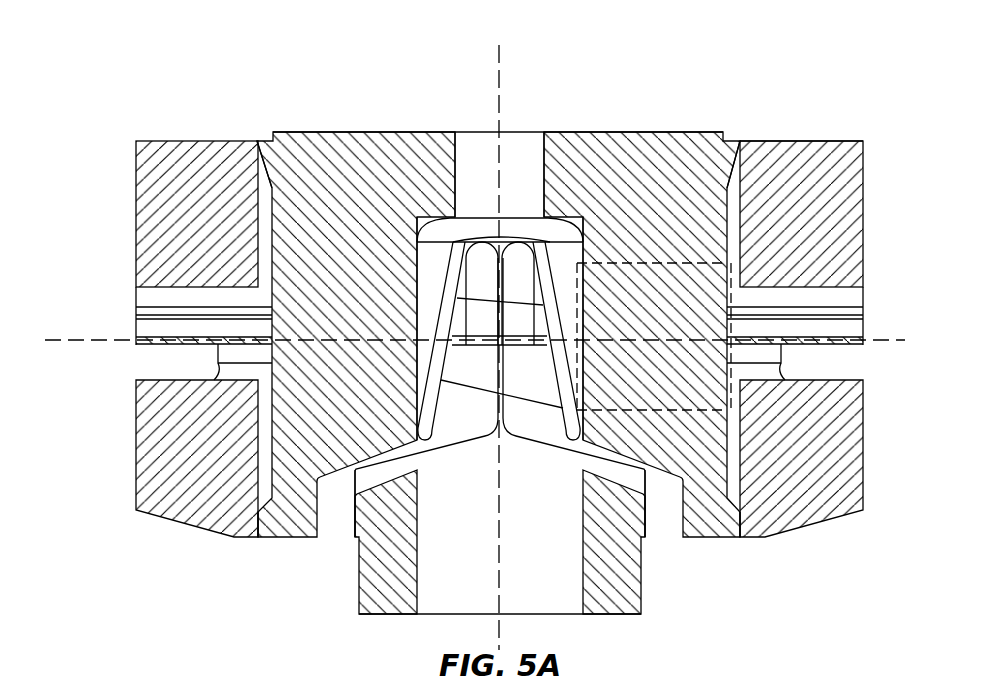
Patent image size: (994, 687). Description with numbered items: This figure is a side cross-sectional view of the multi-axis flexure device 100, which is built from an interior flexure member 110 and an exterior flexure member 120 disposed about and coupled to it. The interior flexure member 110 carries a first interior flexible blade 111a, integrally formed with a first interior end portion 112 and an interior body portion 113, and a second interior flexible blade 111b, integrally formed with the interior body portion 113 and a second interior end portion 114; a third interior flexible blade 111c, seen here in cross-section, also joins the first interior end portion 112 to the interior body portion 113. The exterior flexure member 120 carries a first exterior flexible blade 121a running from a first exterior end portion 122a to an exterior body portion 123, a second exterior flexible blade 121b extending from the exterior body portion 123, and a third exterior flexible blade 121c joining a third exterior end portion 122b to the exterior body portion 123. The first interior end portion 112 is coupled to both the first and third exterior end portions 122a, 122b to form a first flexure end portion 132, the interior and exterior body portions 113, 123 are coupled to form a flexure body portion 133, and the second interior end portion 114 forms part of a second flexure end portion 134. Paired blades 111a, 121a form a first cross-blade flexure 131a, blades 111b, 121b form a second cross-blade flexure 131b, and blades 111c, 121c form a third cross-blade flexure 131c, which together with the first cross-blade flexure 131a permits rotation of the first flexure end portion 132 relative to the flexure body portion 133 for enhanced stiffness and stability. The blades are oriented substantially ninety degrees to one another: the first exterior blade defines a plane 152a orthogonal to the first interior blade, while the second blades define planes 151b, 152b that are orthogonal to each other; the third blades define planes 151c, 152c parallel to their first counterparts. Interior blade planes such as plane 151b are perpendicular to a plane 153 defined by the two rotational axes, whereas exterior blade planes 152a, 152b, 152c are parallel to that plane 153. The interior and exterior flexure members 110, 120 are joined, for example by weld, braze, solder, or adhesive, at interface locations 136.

The multi-axis flexure device 100 is at (333, 82).
The interior flexure member 110 is at (492, 322).
The first interior flexible blade 111a is at (290, 302).
The second interior flexible blade 111b is at (508, 305).
The third interior flexible blade 111c is at (700, 288).
The first interior end portion 112 is at (697, 132).
The interior body portion 113 is at (517, 573).
The second interior end portion 114 is at (597, 616).
The exterior flexure member 120 is at (146, 246).
The first exterior flexible blade 121a is at (153, 340).
The second exterior flexible blade 121b is at (517, 340).
The third exterior flexible blade 121c is at (815, 338).
The first exterior end portion 122a is at (803, 141).
The third exterior end portion 122b is at (180, 158).
The exterior body portion 123 is at (173, 523).
The first cross-blade flexure 131a is at (117, 357).
The second cross-blade flexure 131b is at (473, 320).
The third cross-blade flexure 131c is at (868, 357).
The first flexure end portion 132 is at (802, 224).
The flexure body portion 133 is at (857, 117).
The second flexure end portion 134 is at (659, 592).
The interface locations 136 is at (258, 140).
The plane defined by the second interior flexible blade 151b is at (499, 108).
The plane defined by the third interior flexible blade 151c is at (653, 263).
The plane defined by the first exterior flexible blade 152a is at (98, 340).
The plane defined by the second exterior flexible blade 152b is at (440, 345).
The plane defined by the third exterior flexible blade 152c is at (898, 340).
The plane defined by the first and second axes 153 is at (672, 345).